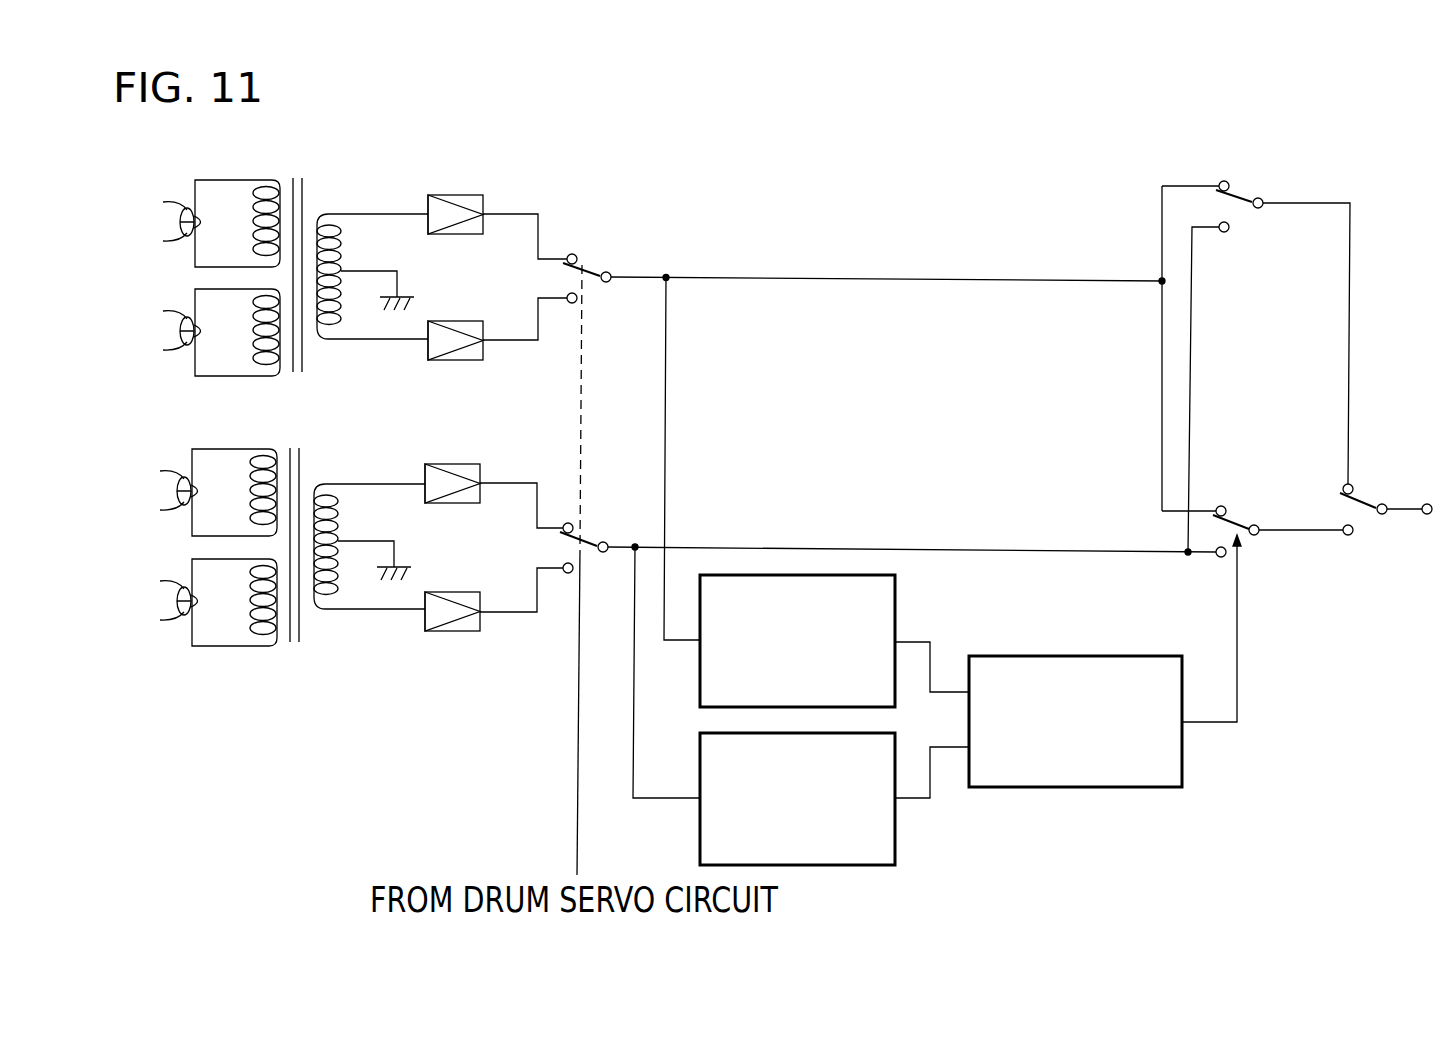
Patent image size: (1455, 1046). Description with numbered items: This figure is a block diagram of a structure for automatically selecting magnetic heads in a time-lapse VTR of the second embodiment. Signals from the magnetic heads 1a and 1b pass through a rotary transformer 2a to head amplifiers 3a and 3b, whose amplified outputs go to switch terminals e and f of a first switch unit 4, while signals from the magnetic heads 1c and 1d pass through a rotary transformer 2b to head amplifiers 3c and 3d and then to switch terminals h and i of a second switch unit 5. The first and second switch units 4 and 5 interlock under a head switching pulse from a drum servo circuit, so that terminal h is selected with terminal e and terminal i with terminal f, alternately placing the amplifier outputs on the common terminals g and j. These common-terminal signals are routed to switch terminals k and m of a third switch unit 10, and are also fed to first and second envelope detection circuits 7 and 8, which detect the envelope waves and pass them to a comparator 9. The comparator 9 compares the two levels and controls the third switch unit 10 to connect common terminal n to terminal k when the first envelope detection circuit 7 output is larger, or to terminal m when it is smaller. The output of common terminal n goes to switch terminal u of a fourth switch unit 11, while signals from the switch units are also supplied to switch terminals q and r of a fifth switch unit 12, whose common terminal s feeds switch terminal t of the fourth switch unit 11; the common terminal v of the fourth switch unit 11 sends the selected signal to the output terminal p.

The magnetic head 1a is at (163, 202).
The magnetic head 1b is at (196, 317).
The magnetic head 1c is at (195, 477).
The magnetic head 1d is at (195, 587).
The rotary transformer 2a is at (306, 184).
The rotary transformer 2b is at (357, 525).
The head amplifier 3a is at (462, 195).
The head amplifier 3b is at (462, 321).
The head amplifier 3c is at (462, 464).
The head amplifier 3d is at (462, 592).
The first switch unit 4 is at (588, 264).
The second switch unit 5 is at (586, 538).
The first envelope detection circuit 7 is at (897, 614).
The second envelope detection circuit 8 is at (897, 832).
The comparator 9 is at (1184, 762).
The third switch unit 10 is at (1235, 522).
The fourth switch unit 11 is at (1362, 498).
The fifth switch unit 12 is at (1238, 196).